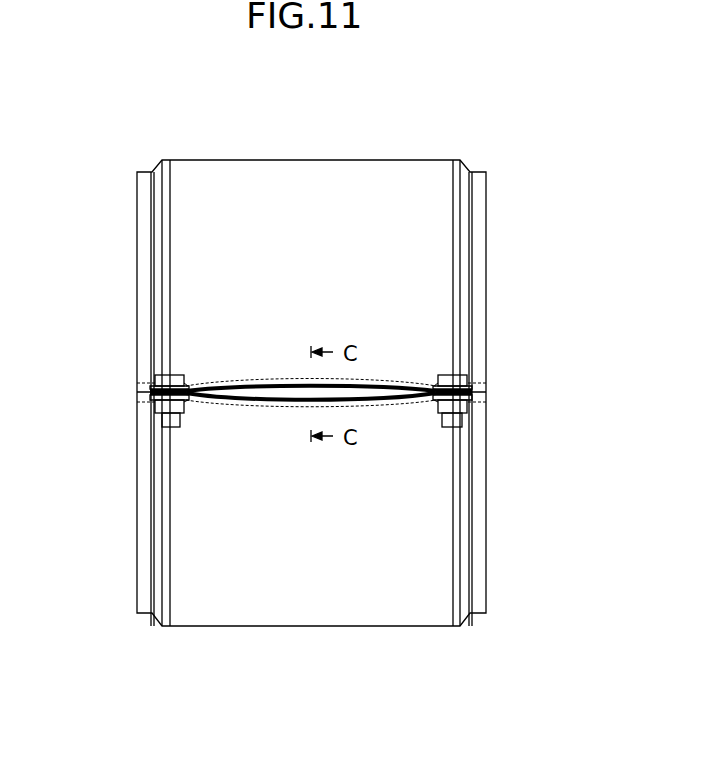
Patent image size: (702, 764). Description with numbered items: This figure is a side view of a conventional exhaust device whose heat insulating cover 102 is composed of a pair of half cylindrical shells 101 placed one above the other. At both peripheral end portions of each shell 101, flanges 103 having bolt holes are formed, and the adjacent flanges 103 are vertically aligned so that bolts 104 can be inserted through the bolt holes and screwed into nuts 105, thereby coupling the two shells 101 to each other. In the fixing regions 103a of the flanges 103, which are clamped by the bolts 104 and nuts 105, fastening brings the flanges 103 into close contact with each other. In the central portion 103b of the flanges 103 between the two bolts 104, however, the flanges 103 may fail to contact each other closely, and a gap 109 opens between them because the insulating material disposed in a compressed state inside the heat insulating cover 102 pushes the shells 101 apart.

The half cylindrical shell 101 is at (377, 177).
The heat insulating cover 102 is at (255, 182).
The flange 103 is at (372, 380).
The fixing region 103a is at (183, 406).
The central portion 103b is at (290, 384).
The bolt 104 is at (158, 378).
The nut 105 is at (160, 409).
The gap 109 is at (294, 403).